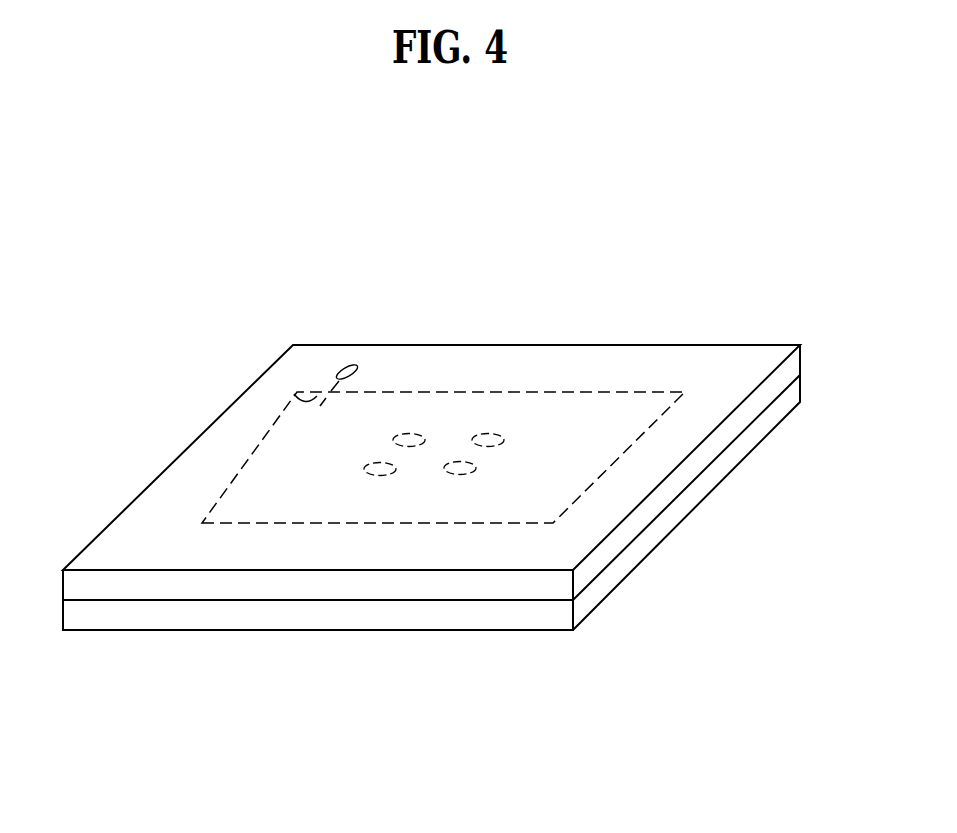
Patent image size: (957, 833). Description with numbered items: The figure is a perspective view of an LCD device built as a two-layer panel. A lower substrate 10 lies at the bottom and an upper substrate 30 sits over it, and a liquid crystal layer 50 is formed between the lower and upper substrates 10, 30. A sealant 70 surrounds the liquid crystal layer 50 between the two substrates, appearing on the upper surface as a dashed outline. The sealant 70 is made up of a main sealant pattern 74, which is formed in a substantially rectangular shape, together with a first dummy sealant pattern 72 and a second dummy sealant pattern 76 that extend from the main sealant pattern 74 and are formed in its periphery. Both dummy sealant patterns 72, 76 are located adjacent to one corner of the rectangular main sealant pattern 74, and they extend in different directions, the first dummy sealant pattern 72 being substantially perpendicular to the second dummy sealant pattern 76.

The lower substrate 10 is at (245, 613).
The upper substrate 30 is at (643, 365).
The liquid crystal layer 50 is at (460, 475).
The sealant 70 is at (280, 248).
The first dummy sealant pattern 72 is at (340, 392).
The main sealant pattern 74 is at (407, 392).
The second dummy sealant pattern 76 is at (312, 400).